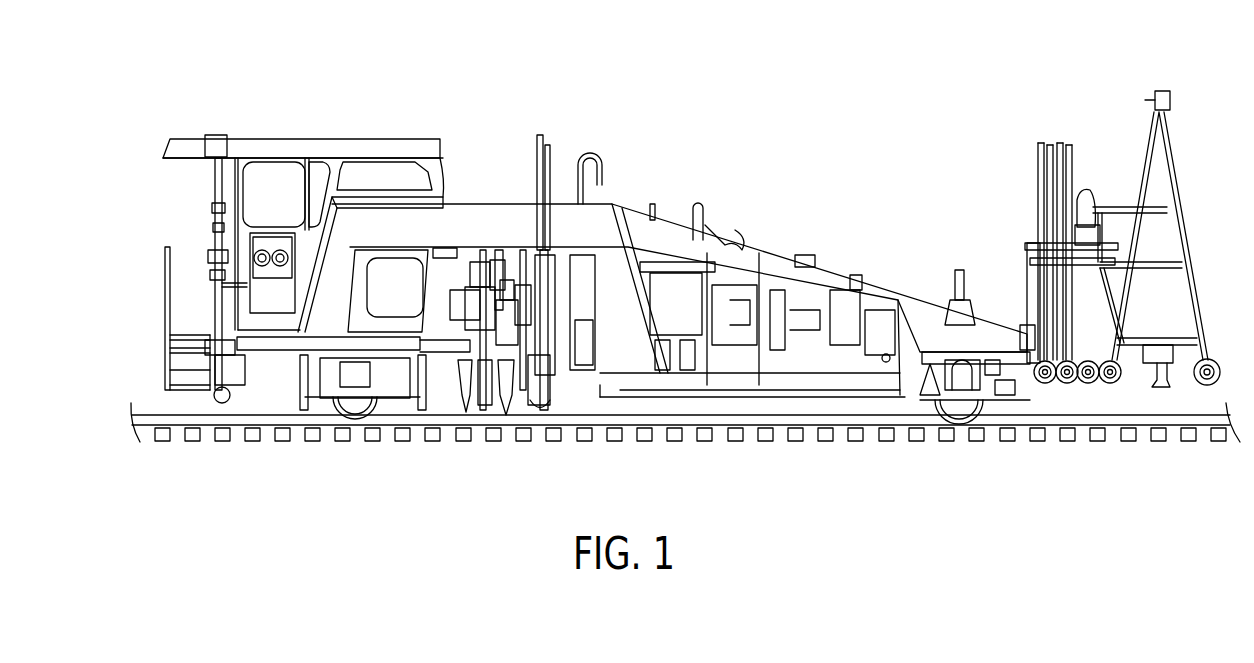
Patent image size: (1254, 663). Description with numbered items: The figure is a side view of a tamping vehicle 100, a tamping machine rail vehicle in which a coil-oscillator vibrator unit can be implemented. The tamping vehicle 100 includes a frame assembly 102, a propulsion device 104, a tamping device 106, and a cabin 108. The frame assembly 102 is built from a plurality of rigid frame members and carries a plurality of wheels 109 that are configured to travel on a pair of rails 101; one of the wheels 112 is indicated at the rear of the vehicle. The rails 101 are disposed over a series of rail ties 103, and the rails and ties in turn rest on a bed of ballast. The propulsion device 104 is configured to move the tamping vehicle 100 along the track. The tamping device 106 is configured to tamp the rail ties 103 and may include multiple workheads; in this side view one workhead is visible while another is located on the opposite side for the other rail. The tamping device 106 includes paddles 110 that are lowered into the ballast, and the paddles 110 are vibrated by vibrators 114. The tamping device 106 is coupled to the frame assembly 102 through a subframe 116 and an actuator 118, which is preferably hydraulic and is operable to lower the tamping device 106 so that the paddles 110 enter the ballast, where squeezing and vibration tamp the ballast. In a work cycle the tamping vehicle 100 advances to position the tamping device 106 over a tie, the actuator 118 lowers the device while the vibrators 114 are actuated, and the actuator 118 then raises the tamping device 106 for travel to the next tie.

The tamping vehicle 100 is at (243, 103).
The pair of rails 101 is at (175, 427).
The frame assembly 102 is at (632, 226).
The rail ties 103 is at (255, 437).
The propulsion device 104 is at (770, 290).
The tamping device 106 is at (517, 395).
The cabin 108 is at (335, 166).
The wheels 109 is at (976, 421).
The paddles 110 is at (465, 388).
The wheel 112 is at (935, 402).
The vibrators 114 is at (518, 300).
The subframe 116 is at (498, 300).
The actuator 118 is at (485, 300).